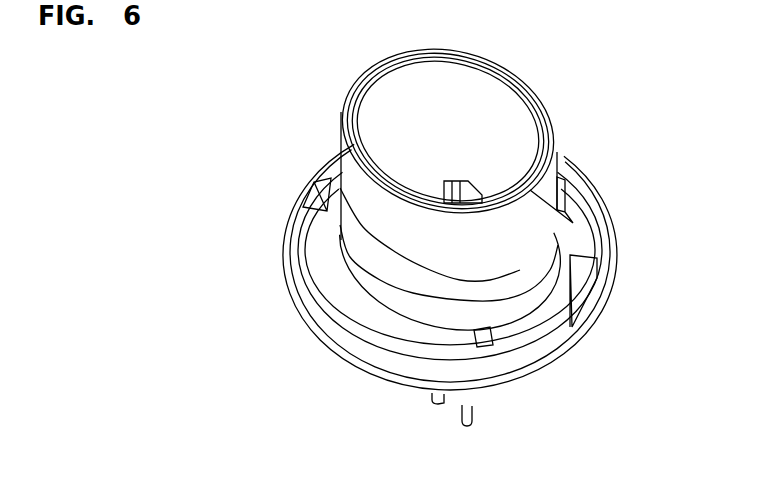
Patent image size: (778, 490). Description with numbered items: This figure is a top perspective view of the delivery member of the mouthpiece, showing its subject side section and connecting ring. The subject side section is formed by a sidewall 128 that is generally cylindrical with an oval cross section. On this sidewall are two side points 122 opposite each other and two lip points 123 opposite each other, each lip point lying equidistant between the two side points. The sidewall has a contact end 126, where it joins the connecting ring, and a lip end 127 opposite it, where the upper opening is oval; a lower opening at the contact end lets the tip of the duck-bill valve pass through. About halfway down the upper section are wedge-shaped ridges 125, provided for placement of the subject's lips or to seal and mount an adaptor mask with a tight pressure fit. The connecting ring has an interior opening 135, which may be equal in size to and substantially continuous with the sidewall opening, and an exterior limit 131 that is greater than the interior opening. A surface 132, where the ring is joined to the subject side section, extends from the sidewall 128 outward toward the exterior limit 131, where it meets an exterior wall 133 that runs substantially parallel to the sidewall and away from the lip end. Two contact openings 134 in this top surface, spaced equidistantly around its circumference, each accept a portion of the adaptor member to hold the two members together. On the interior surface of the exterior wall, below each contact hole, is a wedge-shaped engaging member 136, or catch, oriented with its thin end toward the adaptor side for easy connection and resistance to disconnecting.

The side points 122 is at (573, 223).
The lip points 123 is at (518, 84).
The ridges 125 is at (351, 232).
The contact end 126 is at (553, 283).
The lip end 127 is at (352, 80).
The sidewall 128 is at (456, 246).
The exterior limit 131 is at (283, 245).
The surface 132 is at (321, 264).
The exterior wall 133 is at (395, 365).
The contact openings 134 is at (550, 320).
The interior opening 135 is at (448, 115).
The engaging members 136 is at (323, 187).